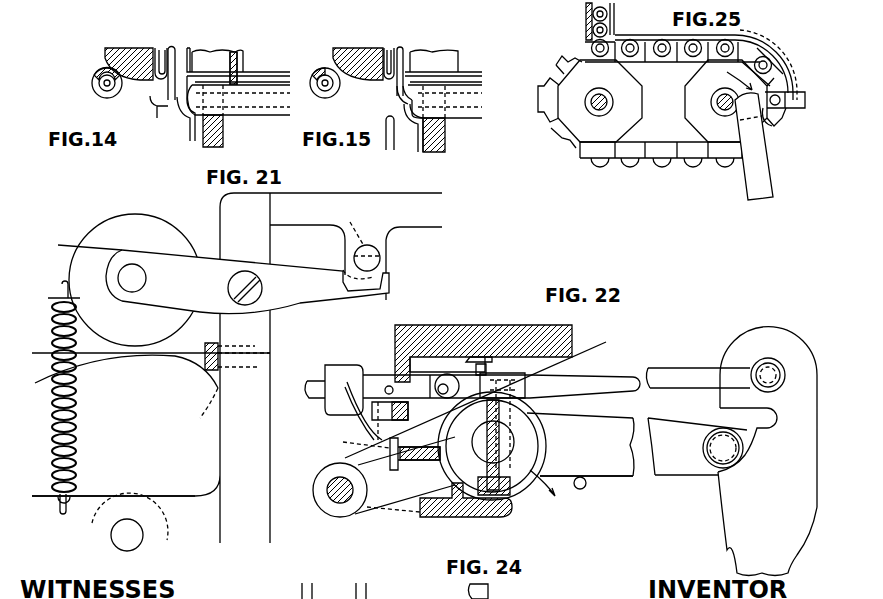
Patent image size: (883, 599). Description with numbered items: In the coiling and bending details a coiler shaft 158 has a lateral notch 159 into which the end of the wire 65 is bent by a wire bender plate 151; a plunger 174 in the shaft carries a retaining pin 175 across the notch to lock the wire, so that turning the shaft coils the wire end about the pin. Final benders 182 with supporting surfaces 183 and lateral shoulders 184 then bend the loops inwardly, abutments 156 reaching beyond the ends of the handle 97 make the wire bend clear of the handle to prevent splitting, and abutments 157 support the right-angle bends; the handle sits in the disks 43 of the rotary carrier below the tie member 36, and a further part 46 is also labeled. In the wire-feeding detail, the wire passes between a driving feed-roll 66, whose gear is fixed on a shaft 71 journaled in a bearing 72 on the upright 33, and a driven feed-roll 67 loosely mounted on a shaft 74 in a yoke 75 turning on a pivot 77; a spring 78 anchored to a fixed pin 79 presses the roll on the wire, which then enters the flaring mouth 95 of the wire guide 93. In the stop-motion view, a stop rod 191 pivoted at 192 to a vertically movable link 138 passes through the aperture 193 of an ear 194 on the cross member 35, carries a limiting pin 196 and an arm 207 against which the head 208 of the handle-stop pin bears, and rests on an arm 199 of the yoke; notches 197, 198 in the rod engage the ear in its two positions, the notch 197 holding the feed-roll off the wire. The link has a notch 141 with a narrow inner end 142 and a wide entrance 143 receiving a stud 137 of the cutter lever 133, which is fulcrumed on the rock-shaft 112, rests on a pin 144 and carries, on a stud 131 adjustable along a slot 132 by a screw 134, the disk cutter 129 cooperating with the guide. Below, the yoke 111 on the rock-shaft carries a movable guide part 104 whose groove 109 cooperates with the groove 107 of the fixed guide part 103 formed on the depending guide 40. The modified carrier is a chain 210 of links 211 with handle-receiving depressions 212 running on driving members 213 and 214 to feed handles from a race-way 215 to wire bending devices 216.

In FIG. 14, the coiler shaft 158 is at (98, 70).
In FIG. 15, the coiler shaft 158 is at (318, 68).
In FIG. 14, the lateral notch 159 is at (104, 92).
In FIG. 15, the lateral notch 159 is at (322, 94).
In FIG. 14, the retaining pin 175 is at (92, 80).
In FIG. 14, the plunger 174 is at (95, 92).
In FIG. 15, the plunger 174 is at (315, 74).
In FIG. 14, the final bender 182 is at (125, 48).
In FIG. 15, the final bender 182 is at (362, 48).
In FIG. 14, the lateral shoulder 184 is at (161, 48).
In FIG. 15, the lateral shoulder 184 is at (389, 48).
In FIG. 14, the supporting surface 183 is at (173, 48).
In FIG. 15, the supporting surface 183 is at (401, 48).
In FIG. 14, the wire 65 is at (190, 50).
In FIG. 15, the wire 65 is at (397, 92).
In FIG. 25, the wire 65 is at (742, 60).
In FIG. 21, the wire 65 is at (192, 364).
In FIG. 14, the horizontal tie member 36 is at (234, 50).
In FIG. 15, the horizontal tie member 36 is at (462, 54).
In FIG. 15, the abutment 157 is at (448, 38).
In FIG. 14, the abutment 156 is at (183, 96).
In FIG. 15, the abutment 156 is at (418, 82).
In FIG. 14, the wire bender plate 151 is at (163, 86).
In FIG. 15, the wire bender plate 151 is at (387, 148).
In FIG. 21, the wire bender plate 151 is at (358, 162).
In FIG. 22, the wire bender plate 151 is at (504, 592).
In FIG. 14, the channel 46 is at (192, 130).
In FIG. 15, the channel 46 is at (416, 138).
In FIG. 14, the disk 43 is at (225, 137).
In FIG. 15, the disk 43 is at (446, 135).
In FIG. 14, the handle 97 is at (256, 111).
In FIG. 15, the handle 97 is at (470, 114).
In FIG. 25, the race-way 215 is at (586, 30).
In FIG. 25, the wire bending device 216 is at (776, 112).
In FIG. 25, the driving member 213 is at (574, 126).
In FIG. 25, the chain 210 is at (634, 142).
In FIG. 25, the link 211 is at (650, 158).
In FIG. 25, the handle-receiving depression 212 is at (662, 158).
In FIG. 25, the driving member 214 is at (724, 134).
In FIG. 21, the driven feed-roll 67 is at (88, 222).
In FIG. 21, the shaft 74 is at (138, 264).
In FIG. 21, the yoke 75 is at (223, 279).
In FIG. 21, the pivot 77 is at (263, 291).
In FIG. 21, the wire guide 93 is at (212, 343).
In FIG. 21, the flaring mouth 95 is at (202, 403).
In FIG. 21, the driving feed-roll 66 is at (237, 368).
In FIG. 22, the driving feed-roll 66 is at (289, 415).
In FIG. 21, the spring 78 is at (77, 398).
In FIG. 21, the bearing 72 is at (84, 496).
In FIG. 21, the fixed pin 79 is at (62, 513).
In FIG. 21, the shaft 71 is at (144, 542).
In FIG. 21, the upright 33 is at (221, 500).
In FIG. 21, the notch 197 is at (343, 228).
In FIG. 22, the notch 197 is at (445, 374).
In FIG. 21, the notch 198 is at (378, 240).
In FIG. 22, the notch 198 is at (452, 375).
In FIG. 21, the cross member 35 is at (290, 230).
In FIG. 22, the cross member 35 is at (490, 326).
In FIG. 21, the stop rod 191 is at (380, 258).
In FIG. 22, the stop rod 191 is at (590, 378).
In FIG. 21, the arm 199 is at (350, 297).
In FIG. 22, the arm 199 is at (365, 418).
In FIG. 22, the pin 196 is at (387, 386).
In FIG. 22, the ear 194 is at (395, 368).
In FIG. 22, the arm 207 is at (332, 372).
In FIG. 22, the aperture 193 is at (392, 420).
In FIG. 22, the head 208 is at (360, 455).
In FIG. 22, the rock-shaft 112 is at (318, 482).
In FIG. 22, the cutter lever 133 is at (386, 476).
In FIG. 22, the yoke 111 is at (424, 518).
In FIG. 22, the movable guide part 104 is at (468, 518).
In FIG. 22, the groove 109 is at (490, 518).
In FIG. 22, the fixed guide part 103 is at (522, 498).
In FIG. 22, the slot 132 is at (520, 475).
In FIG. 22, the groove 107 is at (538, 460).
In FIG. 22, the movable cutter 129 is at (546, 436).
In FIG. 22, the stud 131 is at (491, 410).
In FIG. 22, the adjusting screw 134 is at (525, 374).
In FIG. 22, the depending guide 40 is at (528, 406).
In FIG. 22, the pin 144 is at (587, 484).
In FIG. 22, the pivot 192 is at (769, 364).
In FIG. 22, the notch 141 is at (744, 404).
In FIG. 22, the wide entrance 143 is at (728, 418).
In FIG. 22, the narrow inner end 142 is at (756, 440).
In FIG. 22, the stud 137 is at (716, 460).
In FIG. 22, the link 138 is at (762, 523).